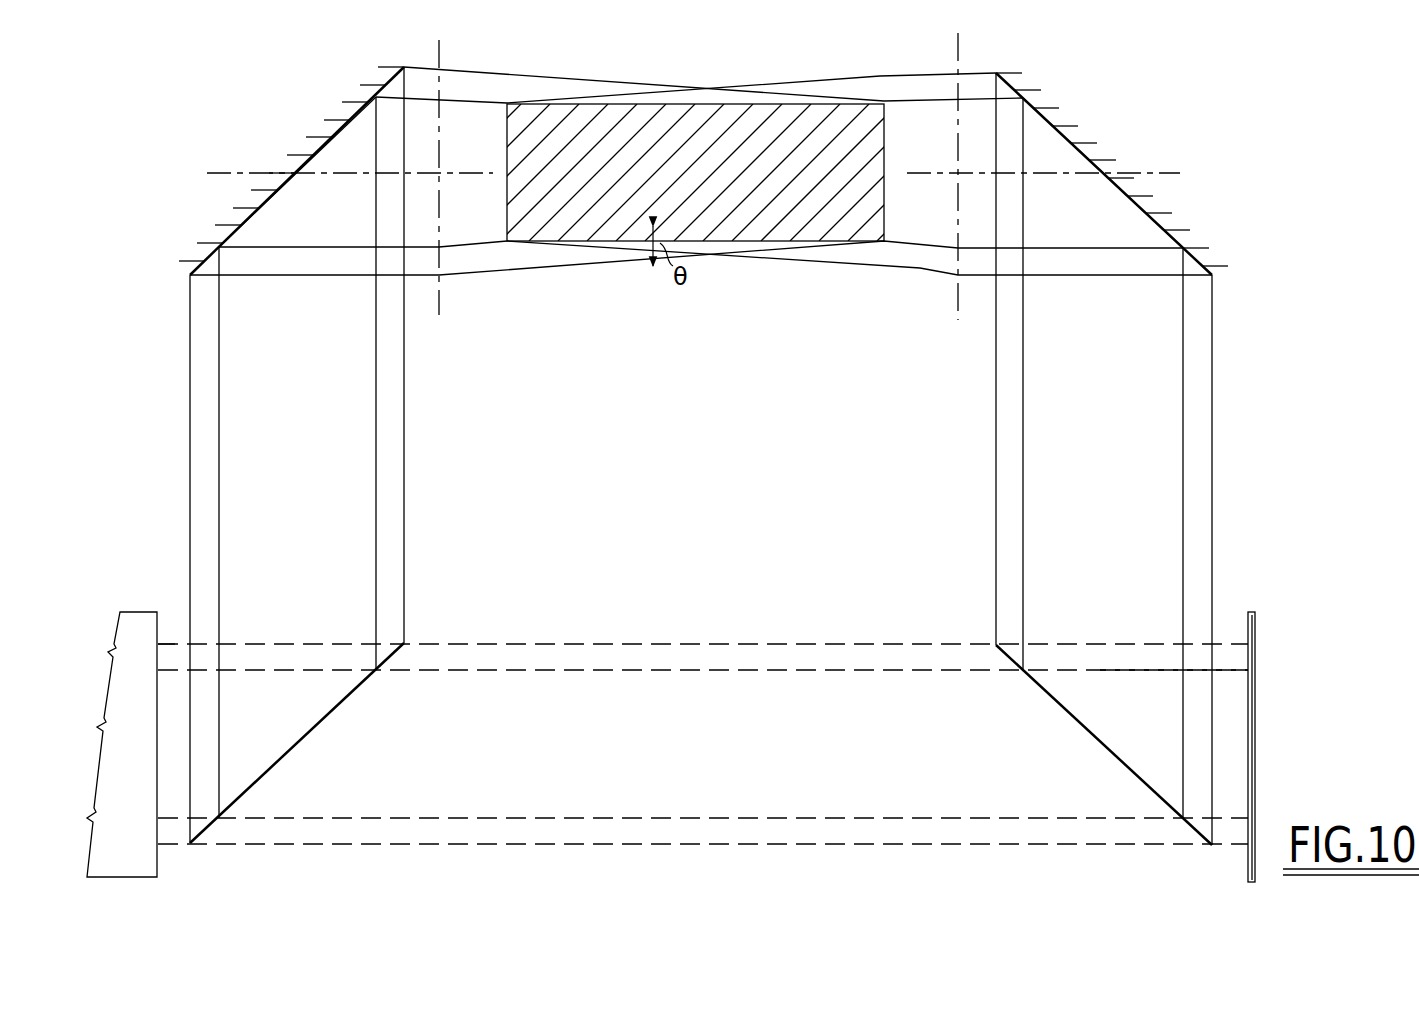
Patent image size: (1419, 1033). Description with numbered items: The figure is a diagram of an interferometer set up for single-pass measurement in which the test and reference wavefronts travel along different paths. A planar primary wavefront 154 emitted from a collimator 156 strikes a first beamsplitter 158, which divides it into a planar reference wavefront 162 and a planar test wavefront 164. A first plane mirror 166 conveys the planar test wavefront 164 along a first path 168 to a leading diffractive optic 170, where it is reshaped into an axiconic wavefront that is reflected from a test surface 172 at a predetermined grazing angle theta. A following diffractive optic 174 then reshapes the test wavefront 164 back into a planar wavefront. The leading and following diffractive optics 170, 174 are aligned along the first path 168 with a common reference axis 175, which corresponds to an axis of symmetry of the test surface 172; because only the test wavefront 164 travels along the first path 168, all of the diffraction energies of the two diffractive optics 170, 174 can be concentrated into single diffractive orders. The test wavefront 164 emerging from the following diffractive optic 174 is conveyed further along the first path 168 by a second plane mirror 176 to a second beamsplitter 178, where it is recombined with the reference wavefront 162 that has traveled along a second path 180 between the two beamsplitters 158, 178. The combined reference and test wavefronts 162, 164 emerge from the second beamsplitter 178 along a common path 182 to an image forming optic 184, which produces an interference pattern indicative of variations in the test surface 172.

The planar primary wavefront 154 is at (175, 643).
The collimator 156 is at (130, 633).
The first beamsplitter 158 is at (343, 705).
The planar reference wavefront 162 is at (600, 643).
The planar test wavefront 164 is at (872, 76).
The first plane mirror 166 is at (279, 191).
The first path 168 is at (222, 351).
The leading diffractive optic 170 is at (440, 297).
The test surface 172 is at (716, 100).
The following diffractive optic 174 is at (957, 300).
The common reference axis 175 is at (248, 172).
The second plane mirror 176 is at (1118, 191).
The second beamsplitter 178 is at (1051, 700).
The second path 180 is at (817, 673).
The common path 182 is at (1155, 673).
The image forming optic 184 is at (1250, 612).